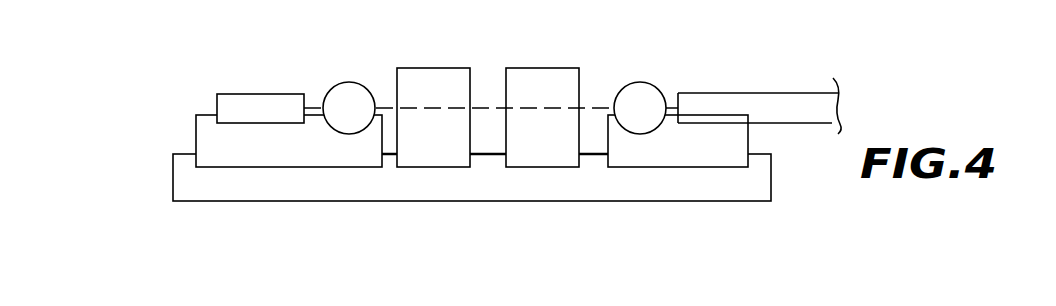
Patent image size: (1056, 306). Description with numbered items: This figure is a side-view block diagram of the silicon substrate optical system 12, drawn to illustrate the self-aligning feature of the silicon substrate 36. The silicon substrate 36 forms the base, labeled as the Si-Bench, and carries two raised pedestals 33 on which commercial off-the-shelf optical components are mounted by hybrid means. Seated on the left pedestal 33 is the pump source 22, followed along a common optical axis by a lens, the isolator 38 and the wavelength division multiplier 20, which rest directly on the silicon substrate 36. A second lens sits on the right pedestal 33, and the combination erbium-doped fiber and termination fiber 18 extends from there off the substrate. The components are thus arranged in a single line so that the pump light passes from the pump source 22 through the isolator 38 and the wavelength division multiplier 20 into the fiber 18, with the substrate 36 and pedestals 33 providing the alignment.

The silicon substrate optical system 12 is at (122, 113).
The combination erbium-doped fiber and termination fiber 18 is at (758, 93).
The wavelength division multiplier 20 is at (541, 68).
The pump source 22 is at (251, 94).
The pedestal 33 is at (250, 155).
The silicon substrate 36 is at (772, 185).
The isolator 38 is at (432, 68).